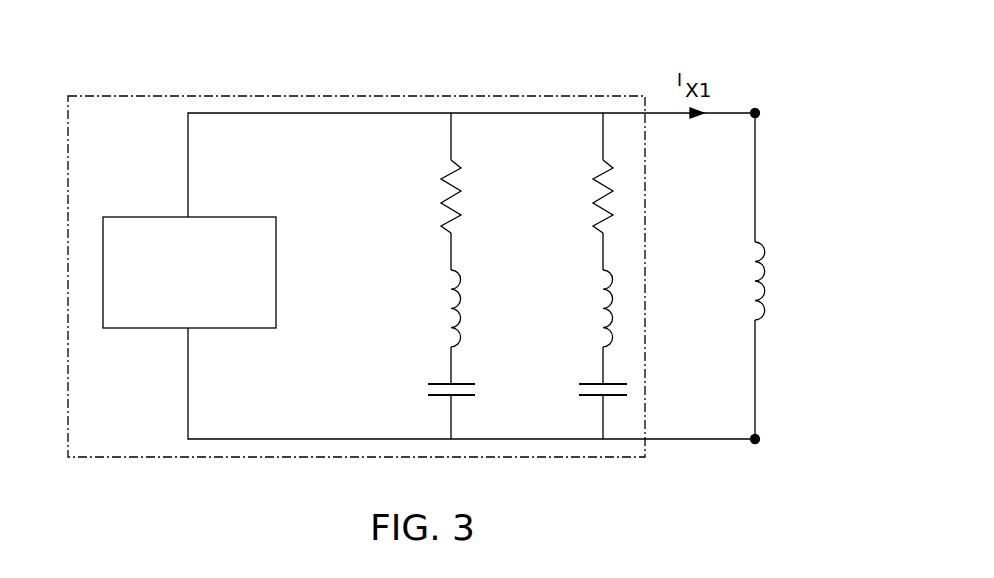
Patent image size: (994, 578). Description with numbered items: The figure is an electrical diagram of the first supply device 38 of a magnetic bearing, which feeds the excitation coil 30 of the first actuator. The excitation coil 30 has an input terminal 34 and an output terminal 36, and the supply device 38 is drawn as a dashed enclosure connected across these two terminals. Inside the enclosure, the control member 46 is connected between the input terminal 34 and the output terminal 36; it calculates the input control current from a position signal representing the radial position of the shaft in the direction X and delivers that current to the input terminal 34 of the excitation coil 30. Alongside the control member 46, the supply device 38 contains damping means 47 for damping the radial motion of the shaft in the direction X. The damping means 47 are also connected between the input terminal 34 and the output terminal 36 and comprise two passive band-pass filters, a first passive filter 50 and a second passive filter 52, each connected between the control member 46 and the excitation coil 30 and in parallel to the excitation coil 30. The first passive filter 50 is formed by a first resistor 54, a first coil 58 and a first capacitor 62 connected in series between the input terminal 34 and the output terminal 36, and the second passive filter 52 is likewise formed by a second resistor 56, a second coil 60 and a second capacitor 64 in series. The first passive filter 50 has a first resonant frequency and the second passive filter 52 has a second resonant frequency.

The excitation coil 30 is at (767, 270).
The input terminal 34 is at (755, 108).
The output terminal 36 is at (755, 445).
The first supply device 38 is at (109, 96).
The control member 46 is at (131, 217).
The damping means 47 is at (368, 171).
The first passive filter 50 is at (426, 241).
The second passive filter 52 is at (574, 241).
The first resistor 54 is at (441, 190).
The second resistor 56 is at (593, 190).
The first coil 58 is at (456, 298).
The second coil 60 is at (608, 298).
The first capacitor 62 is at (440, 384).
The second capacitor 64 is at (590, 384).